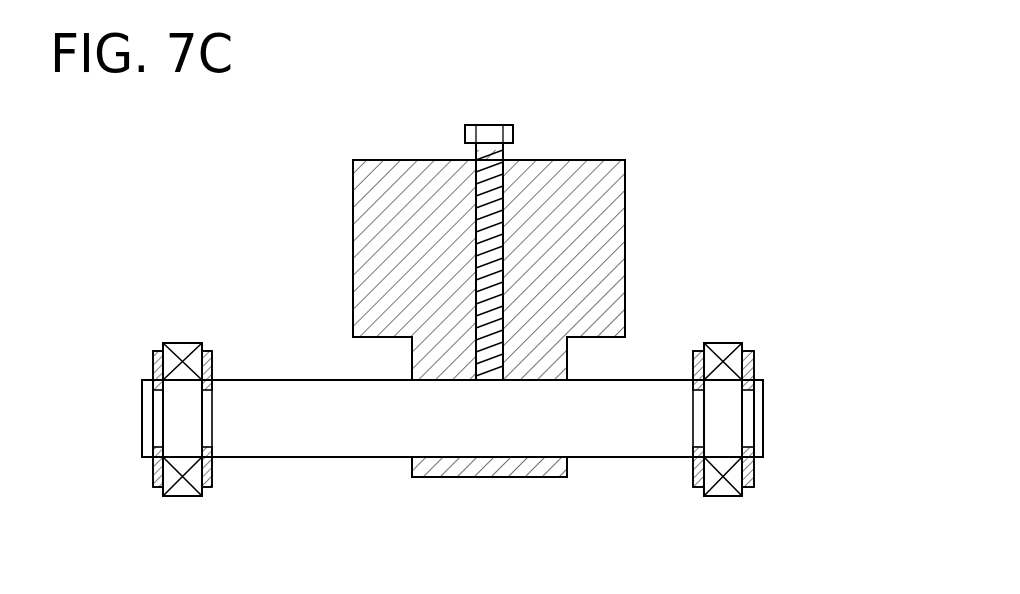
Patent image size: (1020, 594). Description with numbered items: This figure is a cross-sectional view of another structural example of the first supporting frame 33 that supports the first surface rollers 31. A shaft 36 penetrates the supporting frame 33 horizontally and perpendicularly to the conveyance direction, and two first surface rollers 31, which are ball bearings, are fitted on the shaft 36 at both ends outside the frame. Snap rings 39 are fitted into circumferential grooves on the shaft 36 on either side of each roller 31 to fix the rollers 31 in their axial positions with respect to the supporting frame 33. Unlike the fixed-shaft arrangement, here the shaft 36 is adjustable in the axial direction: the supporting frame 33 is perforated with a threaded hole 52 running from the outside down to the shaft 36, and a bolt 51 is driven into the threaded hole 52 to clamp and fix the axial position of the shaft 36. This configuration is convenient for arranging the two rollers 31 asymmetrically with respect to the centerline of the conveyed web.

The first surface roller 31 is at (182, 343).
The first supporting frame 33 is at (625, 201).
The shaft 36 is at (622, 458).
The snap ring 39 is at (152, 351).
The bolt 51 is at (478, 157).
The threaded hole 52 is at (490, 160).